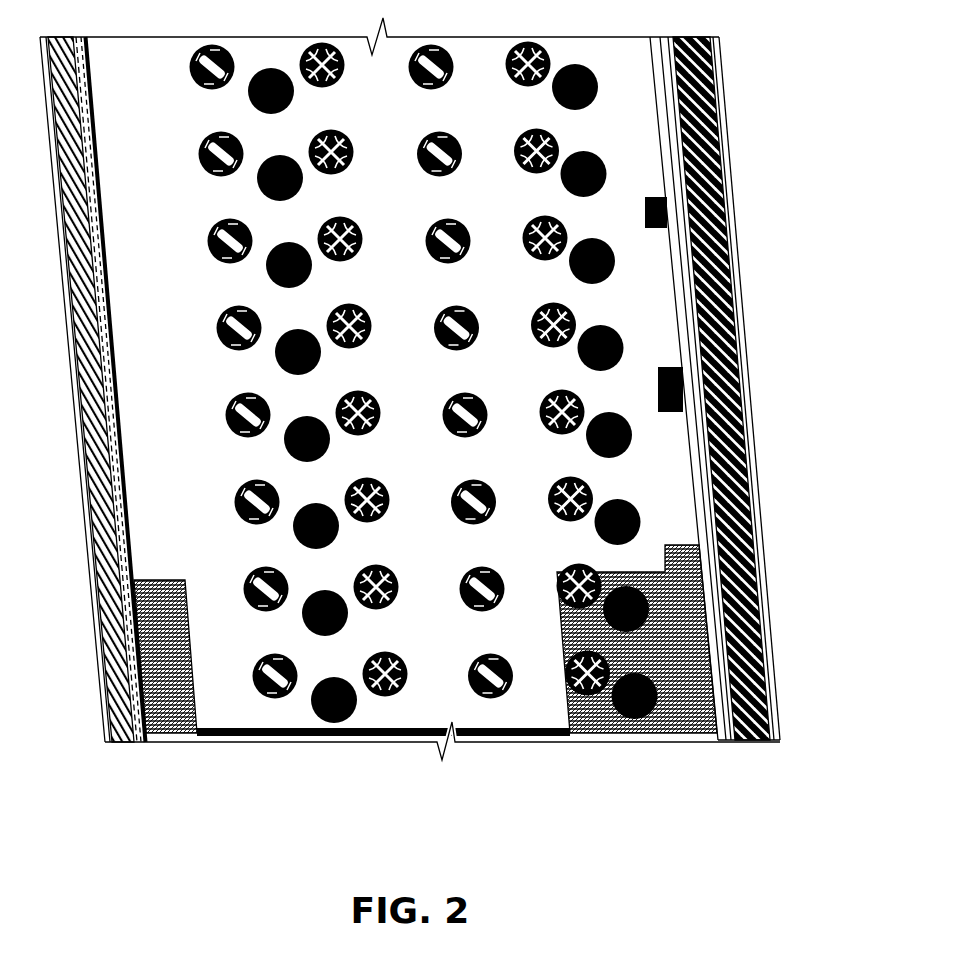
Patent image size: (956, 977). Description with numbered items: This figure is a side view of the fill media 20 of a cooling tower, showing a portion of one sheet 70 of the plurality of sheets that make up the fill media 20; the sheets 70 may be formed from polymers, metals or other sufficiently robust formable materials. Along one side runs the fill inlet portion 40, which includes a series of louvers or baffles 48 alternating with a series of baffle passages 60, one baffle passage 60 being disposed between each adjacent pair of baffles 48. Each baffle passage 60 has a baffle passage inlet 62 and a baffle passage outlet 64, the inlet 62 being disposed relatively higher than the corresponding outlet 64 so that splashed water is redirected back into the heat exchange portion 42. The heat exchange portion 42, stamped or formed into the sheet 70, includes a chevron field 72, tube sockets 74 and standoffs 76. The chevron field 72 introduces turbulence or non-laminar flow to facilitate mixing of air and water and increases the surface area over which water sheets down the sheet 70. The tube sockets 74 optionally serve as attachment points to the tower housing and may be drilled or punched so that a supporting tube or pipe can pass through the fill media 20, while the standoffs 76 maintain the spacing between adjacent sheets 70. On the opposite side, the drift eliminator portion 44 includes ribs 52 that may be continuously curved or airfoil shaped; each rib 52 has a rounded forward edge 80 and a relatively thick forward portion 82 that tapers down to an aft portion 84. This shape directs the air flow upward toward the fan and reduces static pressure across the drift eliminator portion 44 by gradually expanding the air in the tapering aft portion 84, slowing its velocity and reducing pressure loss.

The fill media 20 is at (300, 757).
The fill inlet portion 40 is at (110, 411).
The heat exchange portion 42 is at (498, 748).
The drift eliminator portion 44 is at (743, 414).
The louvers or baffles 48 is at (137, 494).
The ribs 52 is at (770, 700).
The baffle passages 60 is at (97, 563).
The baffle passage inlet 62 is at (94, 530).
The baffle passage outlet 64 is at (134, 548).
The sheet 70 is at (233, 708).
The chevron field 72 is at (560, 622).
The tube sockets 74 is at (292, 537).
The standoffs 76 is at (392, 598).
The rounded forward edge 80 is at (738, 725).
The forward portion 82 is at (723, 747).
The aft portion 84 is at (765, 670).